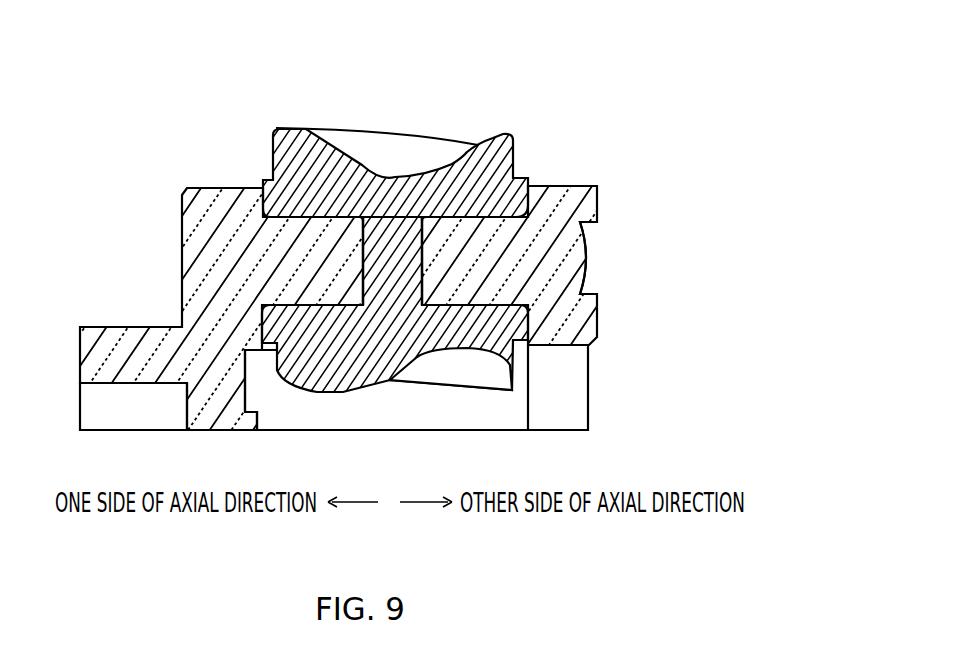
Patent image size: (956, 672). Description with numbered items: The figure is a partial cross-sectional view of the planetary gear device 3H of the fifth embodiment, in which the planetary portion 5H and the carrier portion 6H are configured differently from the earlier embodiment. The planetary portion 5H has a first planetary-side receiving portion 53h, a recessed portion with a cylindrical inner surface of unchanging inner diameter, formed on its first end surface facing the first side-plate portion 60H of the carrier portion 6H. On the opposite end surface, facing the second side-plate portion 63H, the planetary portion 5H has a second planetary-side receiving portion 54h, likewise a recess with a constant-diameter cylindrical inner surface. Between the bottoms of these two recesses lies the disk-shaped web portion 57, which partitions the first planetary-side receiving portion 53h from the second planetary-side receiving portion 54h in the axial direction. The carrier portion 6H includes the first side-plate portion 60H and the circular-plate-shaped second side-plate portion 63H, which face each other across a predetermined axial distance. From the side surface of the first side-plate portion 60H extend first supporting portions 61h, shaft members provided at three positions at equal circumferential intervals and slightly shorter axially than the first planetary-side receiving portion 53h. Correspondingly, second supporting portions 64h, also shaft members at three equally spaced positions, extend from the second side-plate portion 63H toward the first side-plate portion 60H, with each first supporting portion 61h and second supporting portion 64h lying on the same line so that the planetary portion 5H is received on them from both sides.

The planetary gear device 3H is at (73, 309).
The carrier portion 6H is at (416, 272).
The first side-plate portion 60H is at (214, 273).
The first supporting portion 61h is at (294, 247).
The second side-plate portion 63H is at (551, 218).
The second supporting portion 64h is at (480, 266).
The planetary portion 5H is at (399, 230).
The first planetary-side receiving portion 53h is at (338, 233).
The web portion 57 is at (388, 249).
The second planetary-side receiving portion 54h is at (468, 232).